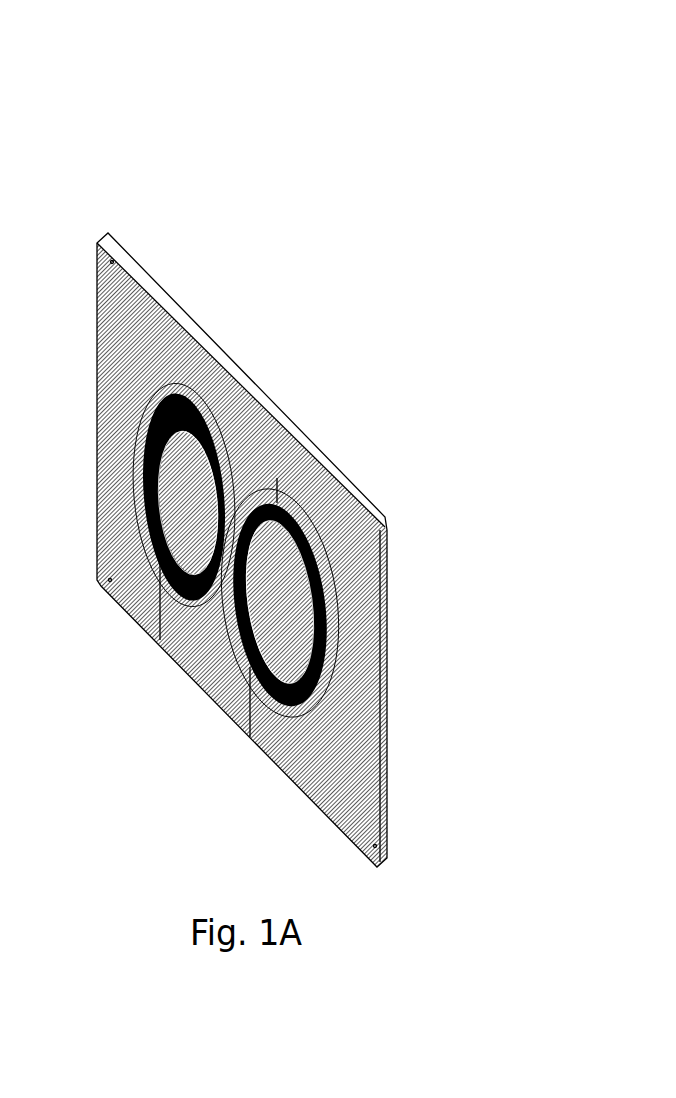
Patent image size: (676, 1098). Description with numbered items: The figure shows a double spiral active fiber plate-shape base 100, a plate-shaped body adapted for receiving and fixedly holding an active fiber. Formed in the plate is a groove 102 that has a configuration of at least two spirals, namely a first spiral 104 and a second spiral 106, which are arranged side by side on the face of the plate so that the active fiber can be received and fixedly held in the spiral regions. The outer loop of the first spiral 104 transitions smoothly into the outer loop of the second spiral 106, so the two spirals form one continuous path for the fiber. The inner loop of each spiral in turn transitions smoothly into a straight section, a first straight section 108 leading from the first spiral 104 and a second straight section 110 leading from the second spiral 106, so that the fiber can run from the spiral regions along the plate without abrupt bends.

The double spiral active fiber plate-shape base 100 is at (308, 435).
The groove 102 is at (267, 497).
The first spiral 104 is at (160, 432).
The second spiral 106 is at (308, 556).
The first straight section 108 is at (163, 483).
The second straight section 110 is at (250, 573).